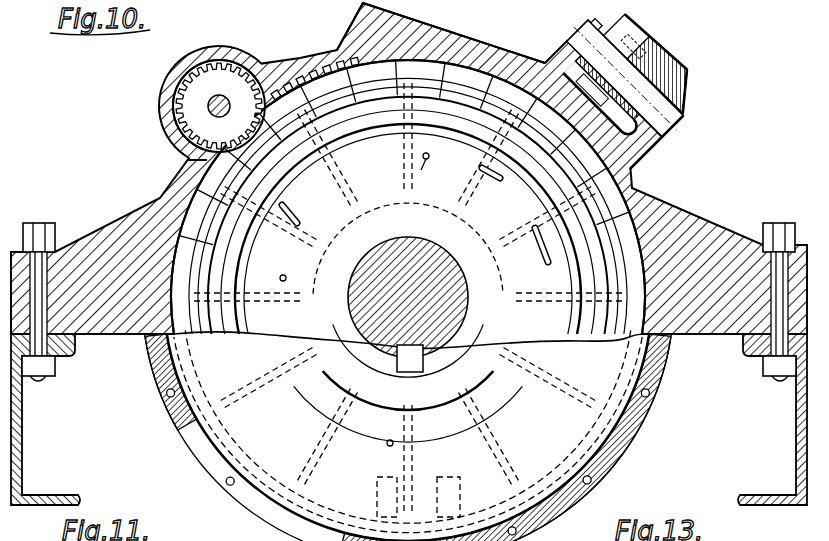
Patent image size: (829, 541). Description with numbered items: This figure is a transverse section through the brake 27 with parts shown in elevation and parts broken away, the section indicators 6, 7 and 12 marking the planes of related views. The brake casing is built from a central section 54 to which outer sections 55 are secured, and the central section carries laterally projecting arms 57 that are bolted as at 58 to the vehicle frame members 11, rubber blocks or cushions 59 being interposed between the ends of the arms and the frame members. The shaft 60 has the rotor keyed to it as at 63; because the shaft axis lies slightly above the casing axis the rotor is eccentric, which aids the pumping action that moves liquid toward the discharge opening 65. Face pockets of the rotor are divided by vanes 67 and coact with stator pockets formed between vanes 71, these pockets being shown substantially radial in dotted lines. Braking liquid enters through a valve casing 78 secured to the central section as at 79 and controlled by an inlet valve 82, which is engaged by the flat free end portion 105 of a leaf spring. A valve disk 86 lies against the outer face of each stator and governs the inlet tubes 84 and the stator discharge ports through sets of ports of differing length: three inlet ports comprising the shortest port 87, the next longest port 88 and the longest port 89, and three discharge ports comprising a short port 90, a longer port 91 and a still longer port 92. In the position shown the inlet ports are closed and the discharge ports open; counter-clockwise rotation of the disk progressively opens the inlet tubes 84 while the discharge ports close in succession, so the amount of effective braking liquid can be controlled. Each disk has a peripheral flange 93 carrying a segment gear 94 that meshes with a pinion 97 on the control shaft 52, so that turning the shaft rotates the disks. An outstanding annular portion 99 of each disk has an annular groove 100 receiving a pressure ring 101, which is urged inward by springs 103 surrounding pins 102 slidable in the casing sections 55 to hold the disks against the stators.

The section line 6- 6 is at (163, 62).
The section line 7- 7 is at (672, 33).
The vehicle frame members 11 is at (488, 96).
The section line 12- 12 is at (583, 343).
The brake 27 is at (686, 208).
The control shaft 52 is at (176, 112).
The central casing section 54 is at (335, 62).
The outer casing sections 55 is at (240, 432).
The laterally projecting arms 57 is at (118, 345).
The bolted connections 58 is at (40, 224).
The rubber blocks 59 is at (88, 362).
The shaft 60 is at (408, 250).
The key 63 is at (428, 353).
The discharge opening 65 is at (415, 22).
The vanes 67 is at (537, 313).
The stator vanes 71 is at (300, 262).
The valve casing 78 is at (690, 70).
The securing means 79 is at (598, 24).
The inlet valve 82 is at (650, 152).
The inlet tubes 84 is at (400, 246).
The valve disk 86 is at (510, 90).
The shortest inlet port 87 is at (356, 299).
The intermediate inlet port 88 is at (405, 299).
The longest inlet port 89 is at (440, 284).
The short discharge port 90 is at (447, 106).
The longer discharge port 91 is at (187, 157).
The longest discharge port 92 is at (657, 175).
The peripheral flange 93 is at (467, 107).
The segment gear 94 is at (292, 85).
The pinions 97 is at (221, 62).
The outstanding annular portion 99 is at (187, 161).
The annular groove 100 is at (470, 95).
The pressure ring 101 is at (320, 163).
The pins 102 is at (214, 113).
The spring 103 is at (445, 250).
The flat free end portion 105 is at (556, 98).